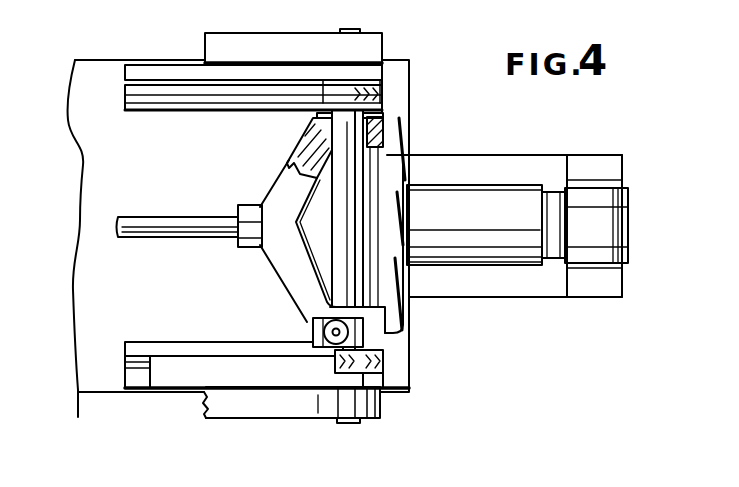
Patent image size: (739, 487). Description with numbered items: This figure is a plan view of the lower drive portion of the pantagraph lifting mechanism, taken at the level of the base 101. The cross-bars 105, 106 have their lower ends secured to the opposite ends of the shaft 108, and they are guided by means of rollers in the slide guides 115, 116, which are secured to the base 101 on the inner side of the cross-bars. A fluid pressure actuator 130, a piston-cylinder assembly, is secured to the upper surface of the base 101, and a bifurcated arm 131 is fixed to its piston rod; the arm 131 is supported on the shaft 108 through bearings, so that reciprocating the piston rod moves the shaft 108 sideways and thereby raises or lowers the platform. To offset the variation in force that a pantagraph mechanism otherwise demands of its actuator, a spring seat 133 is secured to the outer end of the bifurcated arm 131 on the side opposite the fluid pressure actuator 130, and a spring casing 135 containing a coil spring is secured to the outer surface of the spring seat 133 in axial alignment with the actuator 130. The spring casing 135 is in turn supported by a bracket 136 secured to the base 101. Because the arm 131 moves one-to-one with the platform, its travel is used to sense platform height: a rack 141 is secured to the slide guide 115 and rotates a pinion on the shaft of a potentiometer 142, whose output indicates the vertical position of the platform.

The base 101 is at (93, 183).
The cross-bar 105 is at (253, 413).
The cross-bar 106 is at (248, 38).
The shaft 108 is at (365, 167).
The slide guide 115 is at (125, 348).
The slide guide 116 is at (125, 103).
The fluid pressure actuator 130 is at (130, 237).
The bifurcated arm 131 is at (268, 265).
The spring seat 133 is at (403, 142).
The spring casing 135 is at (548, 265).
The bracket 136 is at (602, 220).
The rack 141 is at (186, 378).
The potentiometer 142 is at (353, 338).